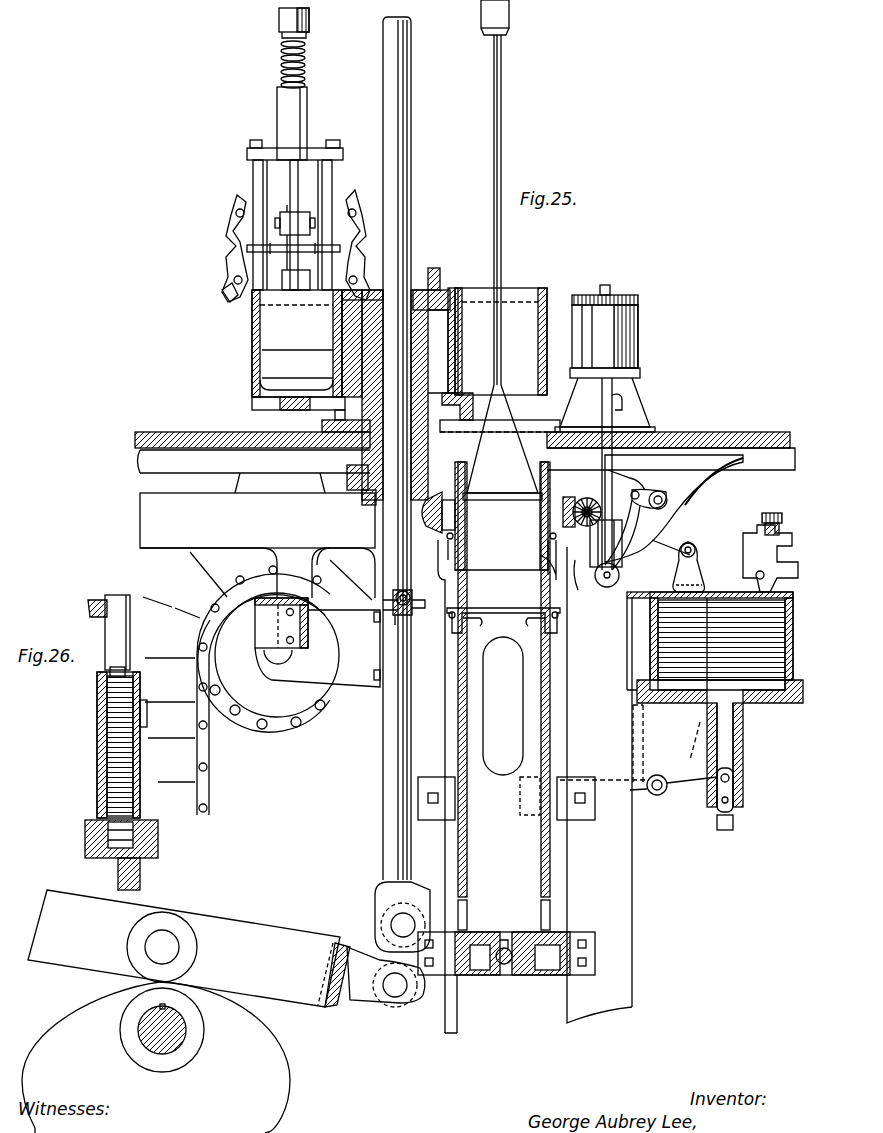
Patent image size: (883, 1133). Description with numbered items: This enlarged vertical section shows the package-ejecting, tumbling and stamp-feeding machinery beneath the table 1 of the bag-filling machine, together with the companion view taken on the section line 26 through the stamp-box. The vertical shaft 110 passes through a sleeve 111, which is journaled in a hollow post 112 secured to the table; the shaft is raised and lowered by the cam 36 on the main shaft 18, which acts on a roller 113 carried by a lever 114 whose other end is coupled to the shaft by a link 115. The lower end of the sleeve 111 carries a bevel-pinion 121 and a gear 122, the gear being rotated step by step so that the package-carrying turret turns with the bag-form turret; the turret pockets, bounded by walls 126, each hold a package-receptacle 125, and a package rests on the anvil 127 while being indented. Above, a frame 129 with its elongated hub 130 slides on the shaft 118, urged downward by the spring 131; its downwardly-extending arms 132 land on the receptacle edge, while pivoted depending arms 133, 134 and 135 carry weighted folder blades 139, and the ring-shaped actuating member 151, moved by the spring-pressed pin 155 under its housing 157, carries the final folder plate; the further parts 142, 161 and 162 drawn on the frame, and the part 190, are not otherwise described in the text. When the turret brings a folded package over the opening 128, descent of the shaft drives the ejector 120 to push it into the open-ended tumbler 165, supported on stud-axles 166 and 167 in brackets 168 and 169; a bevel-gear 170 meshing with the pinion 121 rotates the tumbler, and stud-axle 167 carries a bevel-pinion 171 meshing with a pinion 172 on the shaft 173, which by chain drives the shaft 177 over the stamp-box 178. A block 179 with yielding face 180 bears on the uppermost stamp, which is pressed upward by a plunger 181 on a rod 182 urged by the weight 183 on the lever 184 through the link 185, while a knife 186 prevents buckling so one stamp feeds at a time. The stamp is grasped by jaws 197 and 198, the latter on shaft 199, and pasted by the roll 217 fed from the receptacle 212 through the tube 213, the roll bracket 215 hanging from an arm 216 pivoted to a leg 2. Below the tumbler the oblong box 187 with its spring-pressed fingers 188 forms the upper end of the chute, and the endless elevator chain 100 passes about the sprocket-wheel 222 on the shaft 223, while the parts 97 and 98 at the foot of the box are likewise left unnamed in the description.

In FIG. 25, the table 1 is at (152, 432).
In FIG. 25, the leg 2 is at (557, 802).
In FIG. 25, the shaft 18 is at (170, 1050).
In FIG. 25, the section line 26 is at (755, 540).
In FIG. 25, the cam 36 is at (156, 1057).
In FIG. 25, the pin 97 is at (504, 965).
In FIG. 25, the shaft 98 is at (512, 965).
In FIG. 25, the endless chain 100 is at (210, 745).
In FIG. 25, the shaft 110 is at (412, 160).
In FIG. 25, the sleeve 111 is at (340, 369).
In FIG. 25, the hollow post 112 is at (340, 345).
In FIG. 25, the roller 113 is at (190, 950).
In FIG. 25, the lever 114 is at (330, 928).
In FIG. 25, the link 115 is at (385, 940).
In FIG. 25, the shaft 118 is at (305, 22).
In FIG. 25, the ejector 120 is at (502, 250).
In FIG. 25, the bevel-pinion 121 is at (370, 500).
In FIG. 25, the gear 122 is at (350, 485).
In FIG. 25, the package-receptacle 125 is at (252, 342).
In FIG. 25, the wall 126 is at (455, 340).
In FIG. 25, the anvil 127 is at (278, 405).
In FIG. 25, the opening 128 is at (538, 432).
In FIG. 25, the frame 129 is at (272, 170).
In FIG. 25, the hub 130 is at (285, 113).
In FIG. 25, the spring 131 is at (283, 60).
In FIG. 25, the arm 132 is at (247, 249).
In FIG. 25, the arm 133 is at (360, 195).
In FIG. 25, the arm 134 is at (232, 228).
In FIG. 25, the arm 135 is at (296, 180).
In FIG. 25, the folder blade 139 is at (228, 300).
In FIG. 25, the block 142 is at (296, 290).
In FIG. 25, the actuating member 151 is at (372, 302).
In FIG. 25, the pin 155 is at (440, 292).
In FIG. 25, the housing 157 is at (438, 268).
In FIG. 25, the hub 161 is at (288, 215).
In FIG. 25, the pin 162 is at (230, 210).
In FIG. 25, the tumbler 165 is at (501, 516).
In FIG. 25, the stud-axle 166 is at (458, 515).
In FIG. 25, the stud-axle 167 is at (545, 560).
In FIG. 25, the bracket 168 is at (445, 575).
In FIG. 25, the bracket 169 is at (580, 588).
In FIG. 25, the bevel-gear 170 is at (430, 520).
In FIG. 25, the bevel-pinion 171 is at (572, 495).
In FIG. 25, the pinion 172 is at (625, 476).
In FIG. 25, the shaft 173 is at (668, 500).
In FIG. 25, the shaft 177 is at (690, 545).
In FIG. 25, the stamp-box 178 is at (650, 650).
In FIG. 26, the stamp-box 178 is at (97, 740).
In FIG. 25, the block 179 is at (696, 548).
In FIG. 26, the block 179 is at (115, 630).
In FIG. 25, the yielding face 180 is at (672, 575).
In FIG. 26, the yielding face 180 is at (108, 675).
In FIG. 25, the plunger 181 is at (745, 700).
In FIG. 26, the plunger 181 is at (120, 835).
In FIG. 25, the rod 182 is at (722, 742).
In FIG. 25, the weight 183 is at (530, 815).
In FIG. 25, the lever 184 is at (640, 795).
In FIG. 25, the link 185 is at (722, 800).
In FIG. 25, the knife 186 is at (750, 582).
In FIG. 25, the box-like structure 187 is at (560, 700).
In FIG. 25, the finger 188 is at (478, 620).
In FIG. 25, the block 190 is at (270, 634).
In FIG. 25, the jaw 197 is at (405, 625).
In FIG. 25, the jaw 198 is at (410, 600).
In FIG. 25, the shaft 199 is at (393, 595).
In FIG. 25, the receptacle 212 is at (640, 320).
In FIG. 25, the tube 213 is at (625, 408).
In FIG. 25, the bracket 215 is at (635, 535).
In FIG. 25, the arm 216 is at (705, 500).
In FIG. 25, the roll 217 is at (607, 590).
In FIG. 25, the sprocket-wheel 222 is at (305, 700).
In FIG. 25, the shaft 223 is at (296, 656).